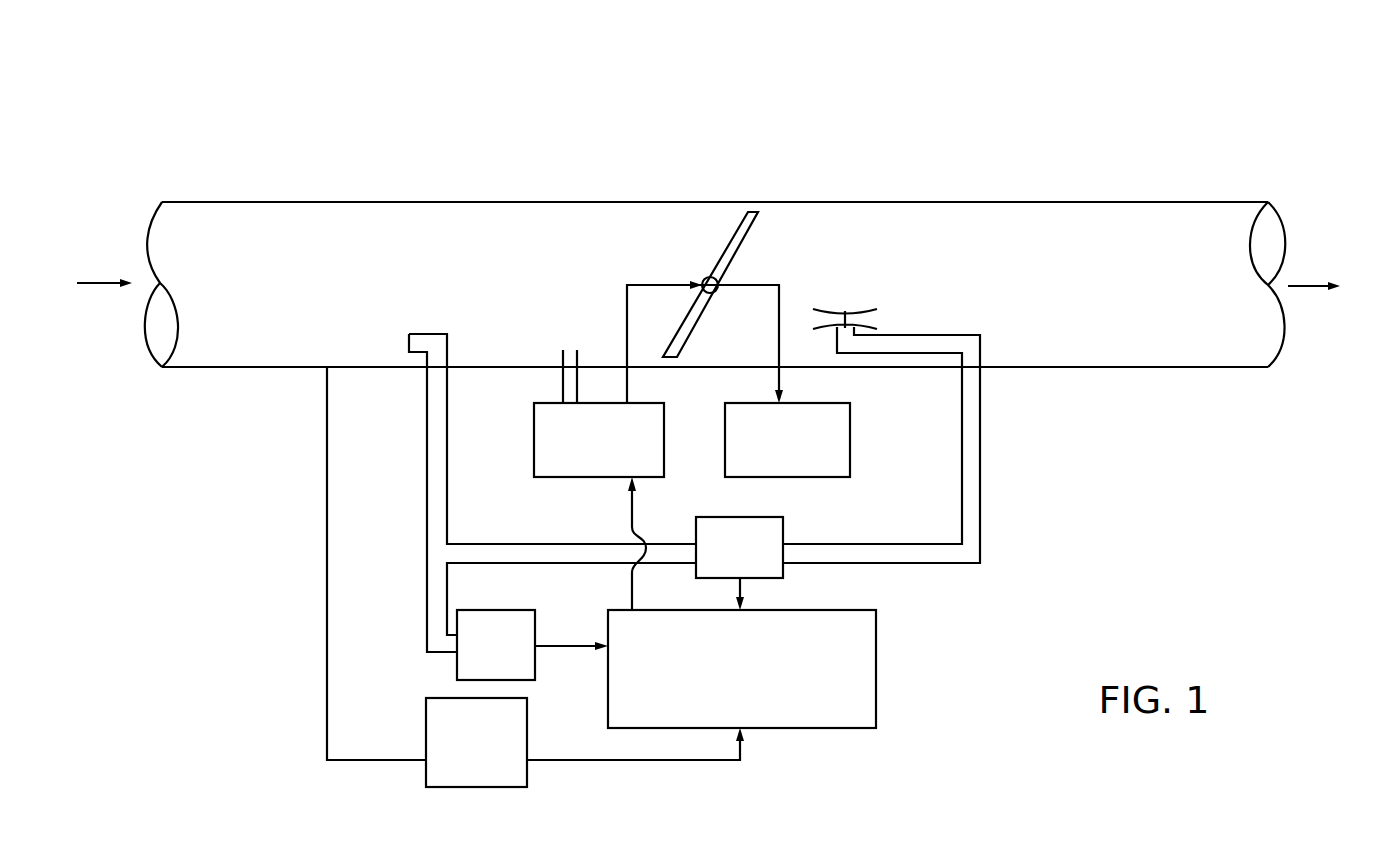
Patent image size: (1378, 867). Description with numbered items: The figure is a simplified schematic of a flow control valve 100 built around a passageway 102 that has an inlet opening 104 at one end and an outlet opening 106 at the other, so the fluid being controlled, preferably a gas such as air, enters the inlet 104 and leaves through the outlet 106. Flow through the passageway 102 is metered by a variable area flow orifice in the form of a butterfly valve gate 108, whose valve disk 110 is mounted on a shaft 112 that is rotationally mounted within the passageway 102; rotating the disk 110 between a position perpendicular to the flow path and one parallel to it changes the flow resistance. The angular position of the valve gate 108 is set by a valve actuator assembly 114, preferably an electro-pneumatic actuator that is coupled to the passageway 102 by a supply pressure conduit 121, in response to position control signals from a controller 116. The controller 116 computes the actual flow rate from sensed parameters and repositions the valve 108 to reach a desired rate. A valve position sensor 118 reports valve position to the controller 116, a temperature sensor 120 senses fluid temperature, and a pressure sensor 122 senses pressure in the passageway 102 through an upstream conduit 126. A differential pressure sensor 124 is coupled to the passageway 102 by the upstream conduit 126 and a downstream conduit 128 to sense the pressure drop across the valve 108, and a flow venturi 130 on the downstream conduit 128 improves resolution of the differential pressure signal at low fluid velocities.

The flow control valve 100 is at (715, 431).
The passageway 102 is at (551, 202).
The inlet opening 104 is at (146, 240).
The outlet opening 106 is at (1284, 228).
The butterfly valve gate 108 is at (731, 266).
The valve disk 110 is at (737, 242).
The shaft 112 is at (707, 280).
The valve actuator assembly 114 is at (540, 428).
The controller 116 is at (876, 655).
The valve position sensor 118 is at (850, 422).
The temperature sensor 120 is at (482, 787).
The supply pressure conduit 121 is at (564, 358).
The pressure sensor 122 is at (462, 668).
The differential pressure sensor 124 is at (785, 518).
The upstream conduit 126 is at (442, 524).
The downstream conduit 128 is at (973, 524).
The flow venturi 130 is at (852, 312).